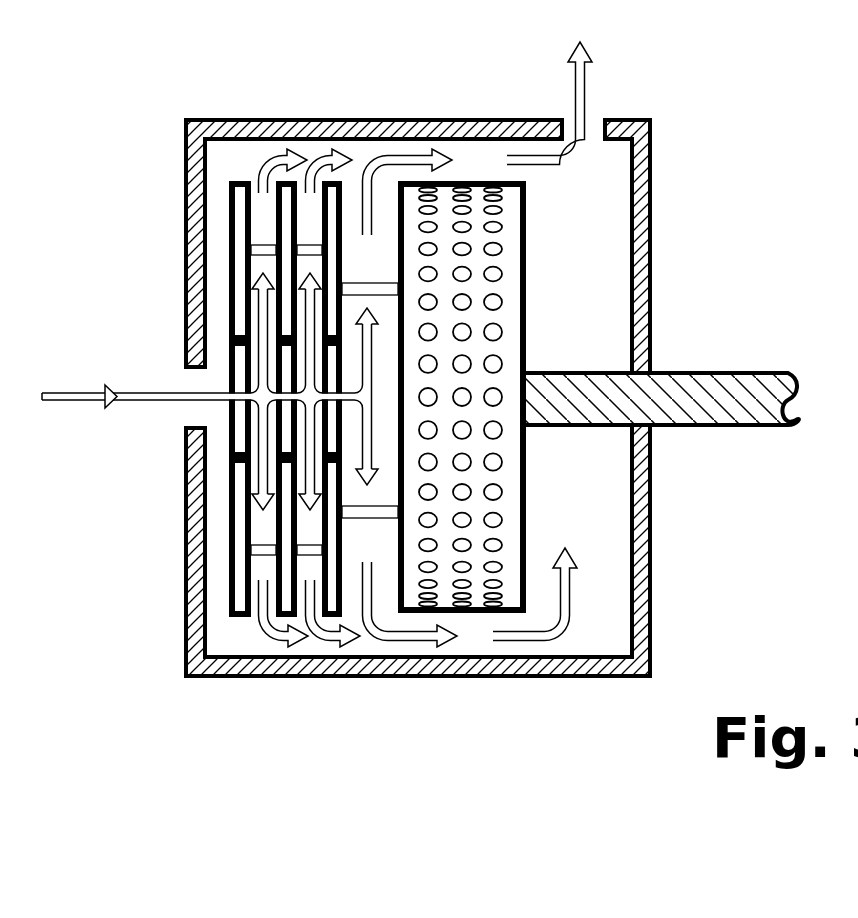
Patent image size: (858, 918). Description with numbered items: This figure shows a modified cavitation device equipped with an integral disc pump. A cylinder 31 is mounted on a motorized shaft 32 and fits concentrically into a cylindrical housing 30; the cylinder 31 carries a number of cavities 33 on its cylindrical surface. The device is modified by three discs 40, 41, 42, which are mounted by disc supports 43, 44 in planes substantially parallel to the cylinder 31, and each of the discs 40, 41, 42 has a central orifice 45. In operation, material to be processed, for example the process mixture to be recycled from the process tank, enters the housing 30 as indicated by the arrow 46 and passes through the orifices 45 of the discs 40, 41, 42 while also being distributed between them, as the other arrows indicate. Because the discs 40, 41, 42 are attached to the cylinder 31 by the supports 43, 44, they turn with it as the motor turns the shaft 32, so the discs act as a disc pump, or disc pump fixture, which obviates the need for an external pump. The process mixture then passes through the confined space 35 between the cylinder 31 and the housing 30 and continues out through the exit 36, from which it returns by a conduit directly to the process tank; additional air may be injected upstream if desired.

The cylindrical housing 30 is at (277, 120).
The cylinder 31 is at (527, 488).
The motorized shaft 32 is at (717, 371).
The cavities 33 is at (462, 305).
The confined space 35 is at (483, 158).
The exit 36 is at (598, 128).
The disc 40 is at (332, 204).
The disc 41 is at (286, 237).
The disc 42 is at (245, 588).
The disc support 43 is at (368, 284).
The disc support 44 is at (322, 545).
The central orifice 45 is at (243, 431).
The arrow 46 is at (185, 393).